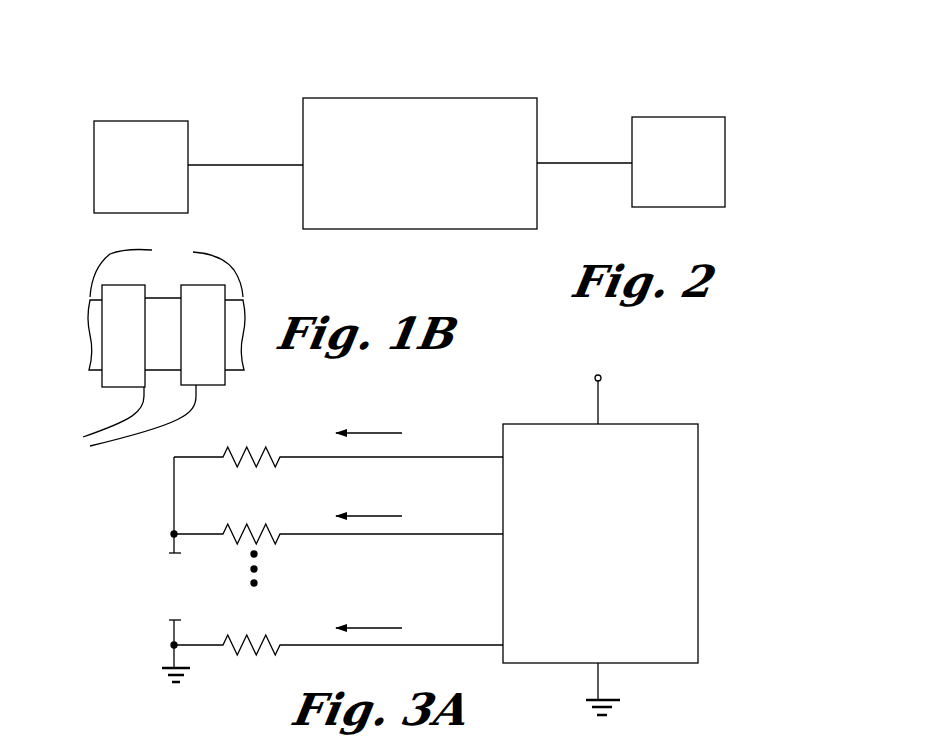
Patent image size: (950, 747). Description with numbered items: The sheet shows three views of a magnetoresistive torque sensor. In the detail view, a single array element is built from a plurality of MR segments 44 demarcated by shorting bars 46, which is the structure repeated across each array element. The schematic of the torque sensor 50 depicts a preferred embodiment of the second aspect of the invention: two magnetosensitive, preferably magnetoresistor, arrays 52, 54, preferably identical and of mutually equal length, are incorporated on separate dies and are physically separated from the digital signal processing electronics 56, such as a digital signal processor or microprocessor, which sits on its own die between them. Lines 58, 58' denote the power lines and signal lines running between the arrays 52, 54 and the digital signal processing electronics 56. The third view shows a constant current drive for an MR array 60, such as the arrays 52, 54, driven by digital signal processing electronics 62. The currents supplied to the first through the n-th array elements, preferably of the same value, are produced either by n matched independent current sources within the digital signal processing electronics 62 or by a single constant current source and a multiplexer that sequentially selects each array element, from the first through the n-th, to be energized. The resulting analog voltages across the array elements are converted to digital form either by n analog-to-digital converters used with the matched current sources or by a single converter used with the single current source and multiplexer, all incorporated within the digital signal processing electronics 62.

In FIG. 2, the torque sensor 50 is at (126, 50).
In FIG. 2, the magnetosensitive array 52 is at (147, 121).
In FIG. 2, the magnetosensitive array 54 is at (670, 117).
In FIG. 2, the digital signal processing electronics 56 is at (398, 98).
In FIG. 2, the line 58 is at (245, 106).
In FIG. 2, the line 58' is at (584, 115).
In FIG. 1B, the MR segment 44 is at (164, 297).
In FIG. 1B, the shorting bar 46 is at (128, 422).
In FIG. 3A, the MR array 60 is at (168, 482).
In FIG. 3A, the digital signal processing electronics 62 is at (678, 422).